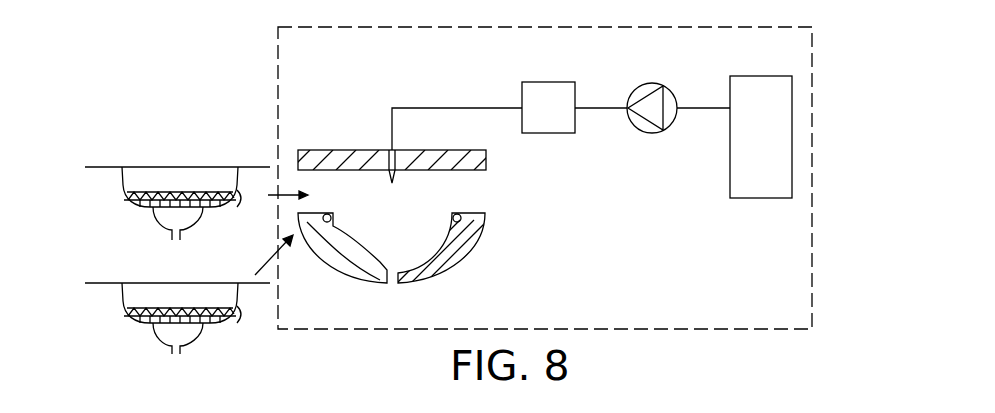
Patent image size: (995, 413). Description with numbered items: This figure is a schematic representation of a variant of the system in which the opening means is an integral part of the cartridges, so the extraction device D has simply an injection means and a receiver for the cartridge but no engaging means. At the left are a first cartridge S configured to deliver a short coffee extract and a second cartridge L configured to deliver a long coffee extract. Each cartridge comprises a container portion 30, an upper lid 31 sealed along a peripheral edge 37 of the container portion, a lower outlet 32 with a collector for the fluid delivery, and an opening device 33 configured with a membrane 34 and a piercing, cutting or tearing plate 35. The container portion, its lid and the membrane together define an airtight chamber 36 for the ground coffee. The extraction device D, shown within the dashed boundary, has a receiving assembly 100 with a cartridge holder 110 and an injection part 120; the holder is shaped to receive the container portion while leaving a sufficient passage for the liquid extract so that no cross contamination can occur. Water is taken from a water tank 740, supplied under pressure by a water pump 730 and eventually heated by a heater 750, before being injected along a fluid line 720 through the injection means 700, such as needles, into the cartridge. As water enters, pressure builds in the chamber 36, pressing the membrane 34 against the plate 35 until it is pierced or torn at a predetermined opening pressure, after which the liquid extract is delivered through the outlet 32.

The container portion 30 is at (121, 168).
The upper lid 31 is at (151, 167).
The lower outlet 32 is at (176, 240).
The opening device 33 is at (253, 258).
The membrane 34 is at (127, 196).
The piercing, cutting or tearing plate 35 is at (160, 325).
The airtight chamber 36 is at (213, 292).
The peripheral edge 37 is at (120, 283).
The receiving assembly 100 is at (435, 230).
The cartridge holder 110 is at (414, 261).
The injection part 120 is at (466, 170).
The injection means 700 is at (395, 149).
The fluid line 720 is at (438, 107).
The water pump 730 is at (664, 84).
The water tank 740 is at (792, 175).
The heater 750 is at (563, 82).
The extraction device D is at (812, 270).